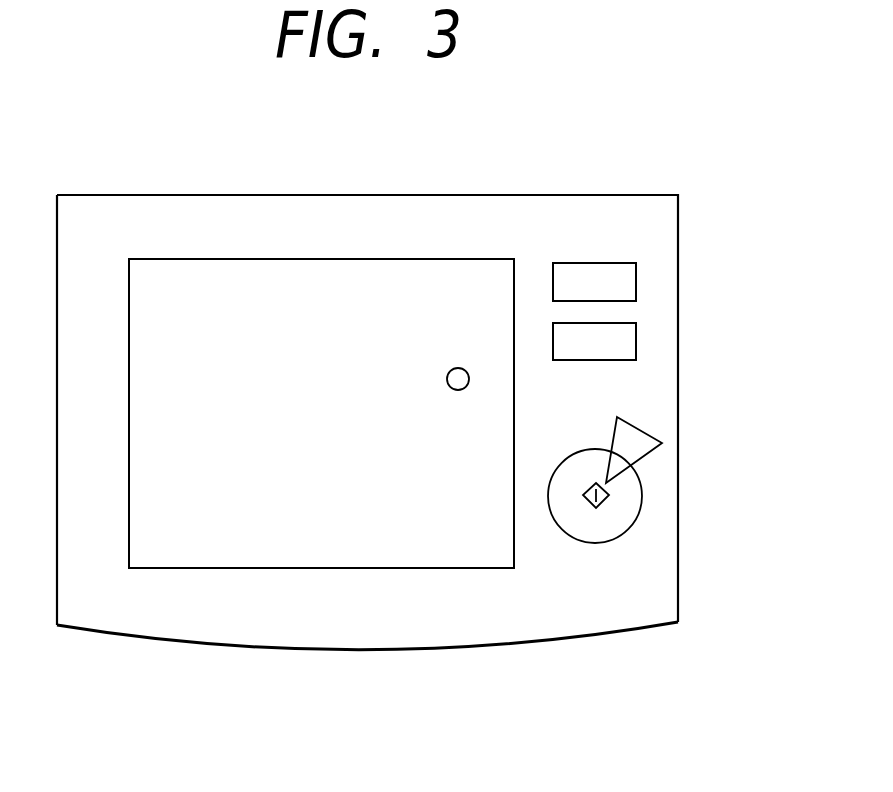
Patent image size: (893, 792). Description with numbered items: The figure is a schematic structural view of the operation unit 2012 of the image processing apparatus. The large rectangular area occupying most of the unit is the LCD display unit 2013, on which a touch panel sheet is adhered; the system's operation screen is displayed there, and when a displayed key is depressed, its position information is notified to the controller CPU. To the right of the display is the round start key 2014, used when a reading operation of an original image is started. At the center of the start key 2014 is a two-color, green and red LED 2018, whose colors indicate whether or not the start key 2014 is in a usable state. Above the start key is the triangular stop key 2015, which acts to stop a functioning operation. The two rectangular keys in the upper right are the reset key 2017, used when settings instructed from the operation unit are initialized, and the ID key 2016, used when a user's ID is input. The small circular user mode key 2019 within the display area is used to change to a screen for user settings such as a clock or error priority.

The operation unit 2012 is at (541, 195).
The LCD display unit 2013 is at (423, 569).
The start key 2014 is at (585, 542).
The stop key 2015 is at (640, 427).
The ID key 2016 is at (636, 333).
The reset key 2017 is at (636, 273).
The two-color LED 2018 is at (609, 495).
The user mode key 2019 is at (469, 378).